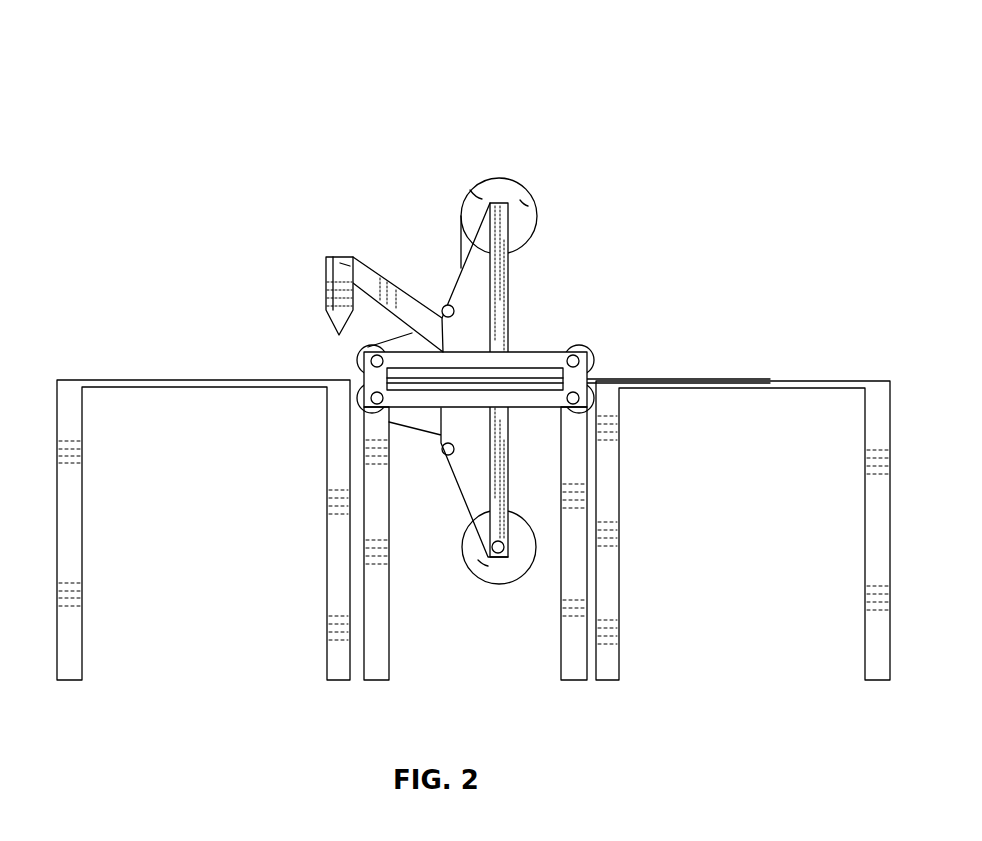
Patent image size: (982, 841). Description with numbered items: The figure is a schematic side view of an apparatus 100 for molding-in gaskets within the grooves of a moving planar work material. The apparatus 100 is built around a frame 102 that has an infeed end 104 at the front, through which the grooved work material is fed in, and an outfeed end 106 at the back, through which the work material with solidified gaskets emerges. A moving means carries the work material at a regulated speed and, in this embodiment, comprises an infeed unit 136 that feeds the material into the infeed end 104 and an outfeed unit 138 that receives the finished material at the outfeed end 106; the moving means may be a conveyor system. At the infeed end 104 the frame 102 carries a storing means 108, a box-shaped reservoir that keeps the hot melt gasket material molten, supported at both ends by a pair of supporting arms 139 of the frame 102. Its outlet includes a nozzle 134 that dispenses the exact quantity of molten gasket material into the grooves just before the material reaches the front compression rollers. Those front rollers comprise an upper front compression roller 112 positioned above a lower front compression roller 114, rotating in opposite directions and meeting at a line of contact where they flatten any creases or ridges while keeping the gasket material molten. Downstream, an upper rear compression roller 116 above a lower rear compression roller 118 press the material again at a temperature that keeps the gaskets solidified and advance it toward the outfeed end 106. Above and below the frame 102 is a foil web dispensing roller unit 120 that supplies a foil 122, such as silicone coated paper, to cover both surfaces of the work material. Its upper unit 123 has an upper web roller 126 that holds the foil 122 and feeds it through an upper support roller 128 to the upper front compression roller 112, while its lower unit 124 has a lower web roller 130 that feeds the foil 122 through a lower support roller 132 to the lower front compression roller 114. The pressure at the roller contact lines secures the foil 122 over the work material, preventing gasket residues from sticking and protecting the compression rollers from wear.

The apparatus 100 is at (116, 46).
The frame 102 is at (512, 281).
The infeed end 104 is at (474, 482).
The outfeed end 106 is at (602, 368).
The storing means 108 is at (338, 275).
The upper front compression roller 112 is at (361, 362).
The lower front compression roller 114 is at (360, 399).
The upper rear compression roller 116 is at (572, 352).
The lower rear compression roller 118 is at (591, 398).
The foil web dispensing roller unit 120 is at (500, 188).
The foil 122 is at (461, 233).
The upper unit 123 is at (525, 203).
The lower unit 124 is at (503, 569).
The upper web roller 126 is at (478, 197).
The upper support roller 128 is at (441, 307).
The lower web roller 130 is at (483, 567).
The lower support roller 132 is at (446, 450).
The nozzle 134 is at (335, 312).
The infeed unit 136 is at (130, 380).
The outfeed unit 138 is at (815, 381).
The supporting arm 139 is at (335, 282).